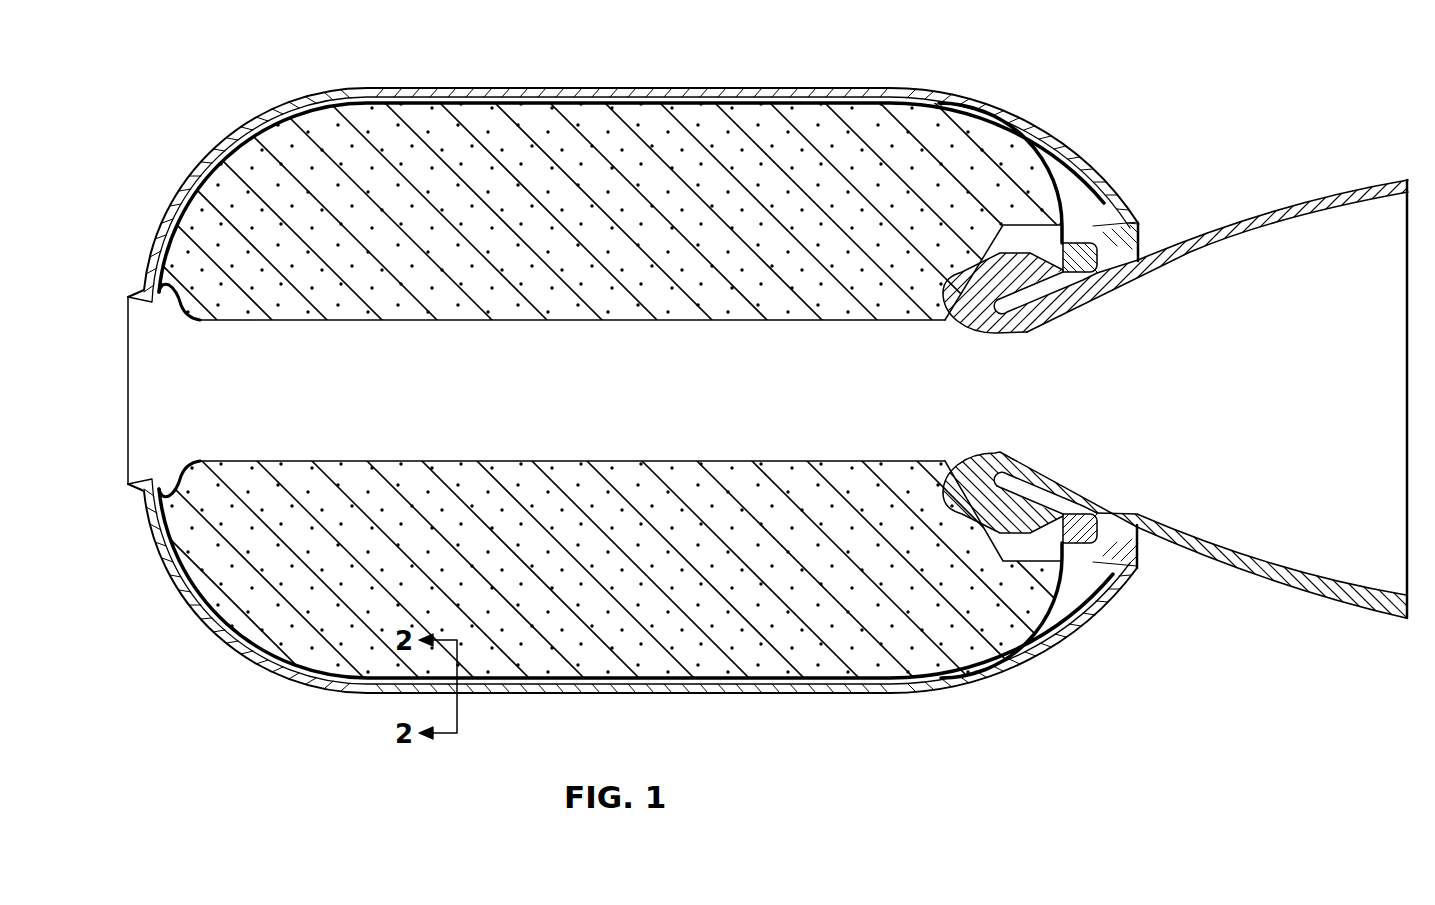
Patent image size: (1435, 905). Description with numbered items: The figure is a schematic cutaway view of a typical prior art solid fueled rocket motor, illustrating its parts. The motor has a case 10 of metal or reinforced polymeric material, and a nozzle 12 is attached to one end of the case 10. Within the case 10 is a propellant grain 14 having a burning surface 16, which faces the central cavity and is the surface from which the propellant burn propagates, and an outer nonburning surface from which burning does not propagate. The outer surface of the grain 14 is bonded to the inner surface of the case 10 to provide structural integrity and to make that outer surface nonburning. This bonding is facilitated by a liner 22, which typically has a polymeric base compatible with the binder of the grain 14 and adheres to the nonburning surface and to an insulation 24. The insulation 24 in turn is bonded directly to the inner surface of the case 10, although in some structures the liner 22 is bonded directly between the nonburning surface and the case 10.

The case 10 is at (213, 147).
The nozzle 12 is at (1366, 209).
The propellant grain 14 is at (260, 595).
The burning surface 16 is at (247, 460).
The liner 22 is at (173, 197).
The insulation 24 is at (157, 253).